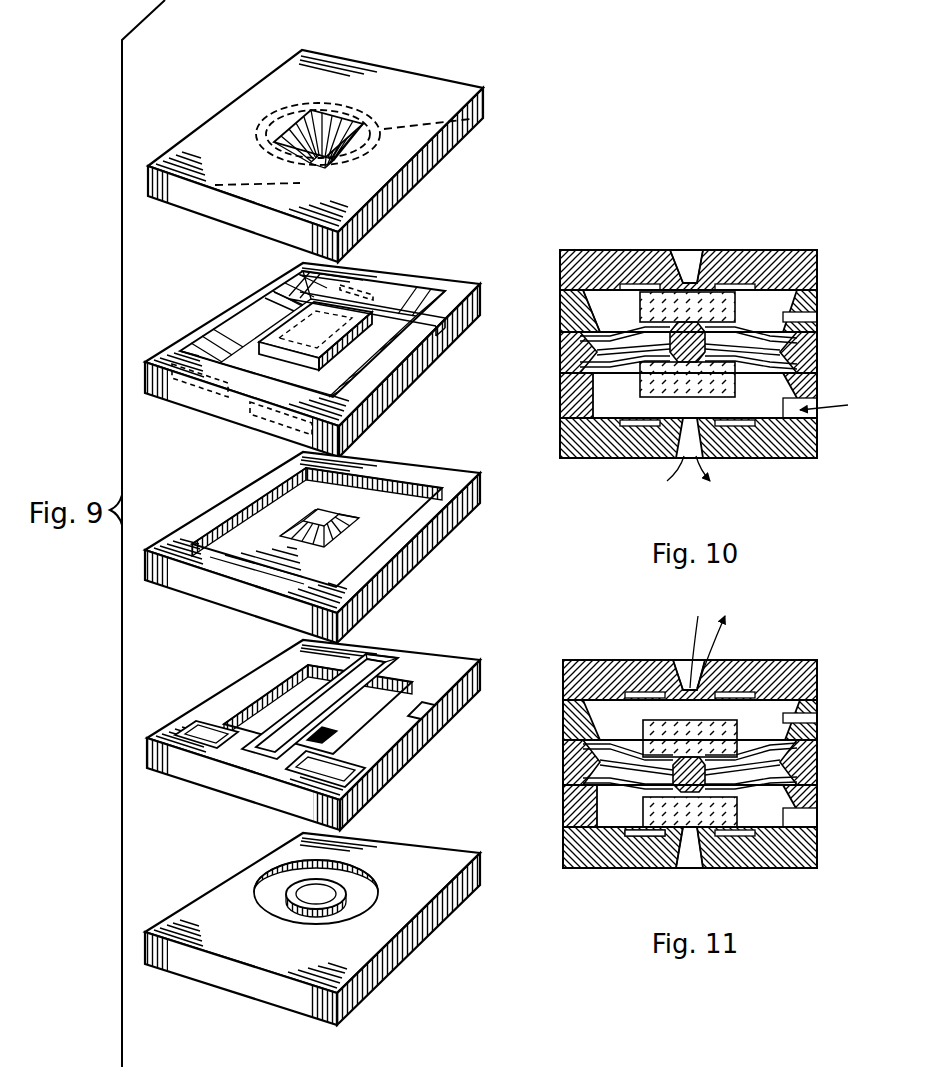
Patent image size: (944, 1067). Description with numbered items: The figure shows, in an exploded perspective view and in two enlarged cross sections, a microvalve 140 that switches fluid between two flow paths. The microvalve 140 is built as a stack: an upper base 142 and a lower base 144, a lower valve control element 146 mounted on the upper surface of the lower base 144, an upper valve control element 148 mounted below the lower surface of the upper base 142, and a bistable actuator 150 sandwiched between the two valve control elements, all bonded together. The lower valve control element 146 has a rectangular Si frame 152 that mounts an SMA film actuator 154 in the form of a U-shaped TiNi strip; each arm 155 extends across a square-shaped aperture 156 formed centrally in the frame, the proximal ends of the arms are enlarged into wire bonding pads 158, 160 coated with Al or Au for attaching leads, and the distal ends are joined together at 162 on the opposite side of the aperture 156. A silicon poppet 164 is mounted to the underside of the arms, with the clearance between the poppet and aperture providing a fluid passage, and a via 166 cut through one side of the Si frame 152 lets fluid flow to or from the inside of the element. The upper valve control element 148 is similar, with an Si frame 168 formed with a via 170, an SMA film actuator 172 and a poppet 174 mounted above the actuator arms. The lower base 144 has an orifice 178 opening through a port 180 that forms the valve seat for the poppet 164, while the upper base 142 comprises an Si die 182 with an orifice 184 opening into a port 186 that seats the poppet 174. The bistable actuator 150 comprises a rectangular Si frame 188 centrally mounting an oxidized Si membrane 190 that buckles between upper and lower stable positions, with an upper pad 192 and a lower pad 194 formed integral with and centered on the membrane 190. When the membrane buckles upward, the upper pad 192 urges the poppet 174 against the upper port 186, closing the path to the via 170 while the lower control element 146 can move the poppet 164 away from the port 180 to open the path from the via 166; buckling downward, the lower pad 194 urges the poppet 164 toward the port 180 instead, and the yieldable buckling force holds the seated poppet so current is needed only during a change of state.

In FIG. 9, the microvalve 140 is at (437, 52).
In FIG. 9, the upper base 142 is at (250, 78).
In FIG. 10, the upper base 142 is at (823, 281).
In FIG. 11, the upper base 142 is at (823, 680).
In FIG. 9, the lower base 144 is at (312, 929).
In FIG. 10, the lower base 144 is at (823, 445).
In FIG. 11, the lower base 144 is at (823, 855).
In FIG. 9, the lower valve control element 146 is at (215, 680).
In FIG. 10, the lower valve control element 146 is at (823, 393).
In FIG. 11, the lower valve control element 146 is at (823, 797).
In FIG. 9, the upper valve control element 148 is at (198, 313).
In FIG. 10, the upper valve control element 148 is at (823, 320).
In FIG. 11, the upper valve control element 148 is at (823, 739).
In FIG. 9, the bistable actuator 150 is at (255, 465).
In FIG. 10, the bistable actuator 150 is at (823, 358).
In FIG. 11, the bistable actuator 150 is at (823, 770).
In FIG. 9, the rectangular Si frame 152 is at (420, 660).
In FIG. 9, the SMA film actuator 154 is at (397, 672).
In FIG. 10, the SMA film actuator 154 is at (592, 350).
In FIG. 9, the arm 155 is at (288, 700).
In FIG. 9, the square-shaped aperture 156 is at (273, 647).
In FIG. 9, the wire bonding pad 158 is at (213, 758).
In FIG. 9, the wire bonding pad 160 is at (297, 790).
In FIG. 9, the joined distal ends 162 is at (377, 640).
In FIG. 9, the silicon poppet 164 is at (380, 725).
In FIG. 10, the silicon poppet 164 is at (715, 394).
In FIG. 11, the silicon poppet 164 is at (740, 816).
In FIG. 9, the via 166 is at (445, 725).
In FIG. 11, the via 166 is at (823, 818).
In FIG. 9, the Si frame 168 is at (440, 270).
In FIG. 9, the via 170 is at (440, 345).
In FIG. 11, the via 170 is at (823, 708).
In FIG. 9, the SMA film actuator 172 is at (367, 318).
In FIG. 10, the SMA film actuator 172 is at (620, 327).
In FIG. 9, the poppet 174 is at (352, 383).
In FIG. 10, the poppet 174 is at (735, 300).
In FIG. 11, the poppet 174 is at (742, 718).
In FIG. 11, the orifice 178 is at (695, 866).
In FIG. 11, the port 180 is at (660, 833).
In FIG. 9, the Si die 182 is at (450, 95).
In FIG. 9, the orifice 184 is at (318, 150).
In FIG. 11, the orifice 184 is at (690, 660).
In FIG. 9, the port 186 is at (487, 117).
In FIG. 10, the port 186 is at (767, 250).
In FIG. 11, the port 186 is at (765, 660).
In FIG. 9, the rectangular Si frame 188 is at (235, 490).
In FIG. 9, the Si membrane 190 is at (408, 495).
In FIG. 9, the upper pad 192 is at (345, 525).
In FIG. 11, the upper pad 192 is at (745, 764).
In FIG. 11, the lower pad 194 is at (645, 795).